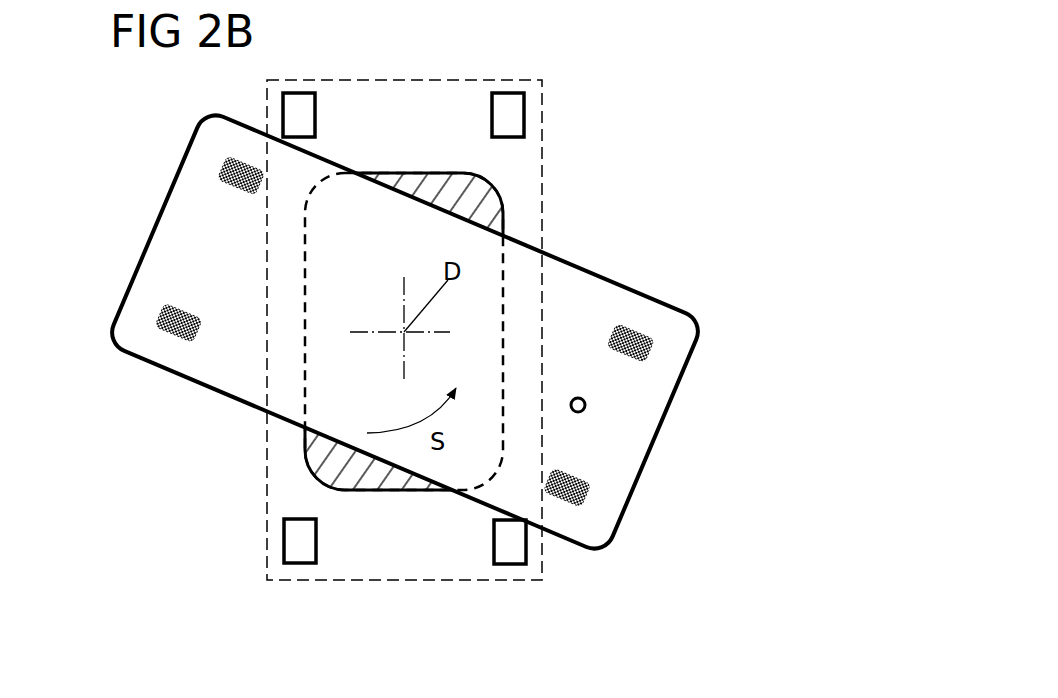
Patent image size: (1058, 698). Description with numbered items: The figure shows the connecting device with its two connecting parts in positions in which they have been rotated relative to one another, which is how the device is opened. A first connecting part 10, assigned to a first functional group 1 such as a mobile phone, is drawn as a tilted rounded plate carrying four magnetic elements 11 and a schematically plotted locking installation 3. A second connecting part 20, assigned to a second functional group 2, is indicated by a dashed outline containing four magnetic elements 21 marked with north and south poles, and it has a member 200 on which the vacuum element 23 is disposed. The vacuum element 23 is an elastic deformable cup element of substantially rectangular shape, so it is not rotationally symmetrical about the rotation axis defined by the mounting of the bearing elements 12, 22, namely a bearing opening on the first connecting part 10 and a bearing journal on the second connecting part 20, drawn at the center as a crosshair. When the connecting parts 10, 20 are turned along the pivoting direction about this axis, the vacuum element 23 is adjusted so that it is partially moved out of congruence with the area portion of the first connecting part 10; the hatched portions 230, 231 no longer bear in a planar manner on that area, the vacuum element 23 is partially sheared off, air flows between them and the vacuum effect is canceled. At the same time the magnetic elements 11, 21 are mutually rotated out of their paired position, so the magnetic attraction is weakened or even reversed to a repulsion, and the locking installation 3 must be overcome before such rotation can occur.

The first functional group 1 is at (687, 290).
The second functional group 2 is at (568, 98).
The locking installation 3 is at (577, 396).
The first connecting part 10 is at (635, 288).
The magnetic elements 11 is at (653, 538).
The bearing element 12 is at (398, 336).
The second connecting part 20 is at (542, 227).
The magnetic elements 21 is at (492, 116).
The bearing element 22 is at (400, 329).
The vacuum element 23 is at (320, 478).
The member 200 is at (518, 195).
The portion of the vacuum element 230 is at (333, 463).
The portion of the vacuum element 231 is at (485, 185).